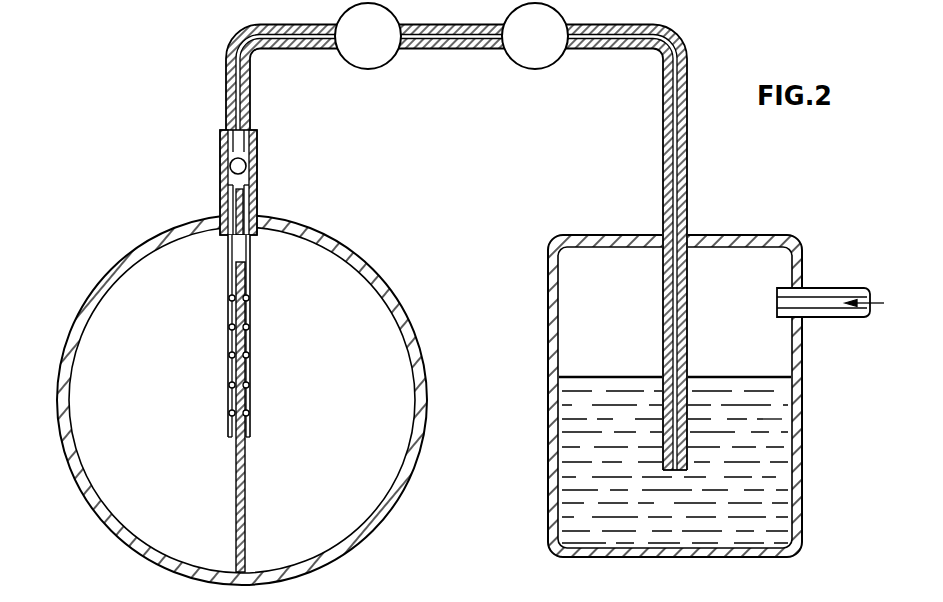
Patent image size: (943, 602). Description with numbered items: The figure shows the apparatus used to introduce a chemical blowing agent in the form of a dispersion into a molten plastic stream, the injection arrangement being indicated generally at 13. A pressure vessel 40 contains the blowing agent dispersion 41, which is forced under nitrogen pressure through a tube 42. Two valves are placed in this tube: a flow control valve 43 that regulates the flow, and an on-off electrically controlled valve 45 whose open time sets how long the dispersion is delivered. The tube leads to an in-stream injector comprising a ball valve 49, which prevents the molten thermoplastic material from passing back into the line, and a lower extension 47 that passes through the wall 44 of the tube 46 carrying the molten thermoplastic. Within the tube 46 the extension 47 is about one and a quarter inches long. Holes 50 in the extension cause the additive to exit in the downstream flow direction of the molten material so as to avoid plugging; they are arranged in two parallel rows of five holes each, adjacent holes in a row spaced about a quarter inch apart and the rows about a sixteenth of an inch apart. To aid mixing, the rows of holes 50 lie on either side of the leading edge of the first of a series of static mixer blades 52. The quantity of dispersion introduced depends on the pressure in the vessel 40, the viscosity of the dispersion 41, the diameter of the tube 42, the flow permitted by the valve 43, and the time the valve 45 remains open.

The gas supply line 13 is at (714, 46).
The pressure vessel 40 is at (730, 375).
The dispersion 41 is at (752, 484).
The tube 42 is at (687, 193).
The flow control valve 43 is at (540, 64).
The wall 44 is at (272, 374).
The on-off electrically controlled valve 45 is at (383, 64).
The tube 46 is at (433, 379).
The lower extension 47 is at (268, 276).
The ball valve 49 is at (245, 170).
The holes 50 is at (249, 298).
The static mixer blades 52 is at (248, 480).